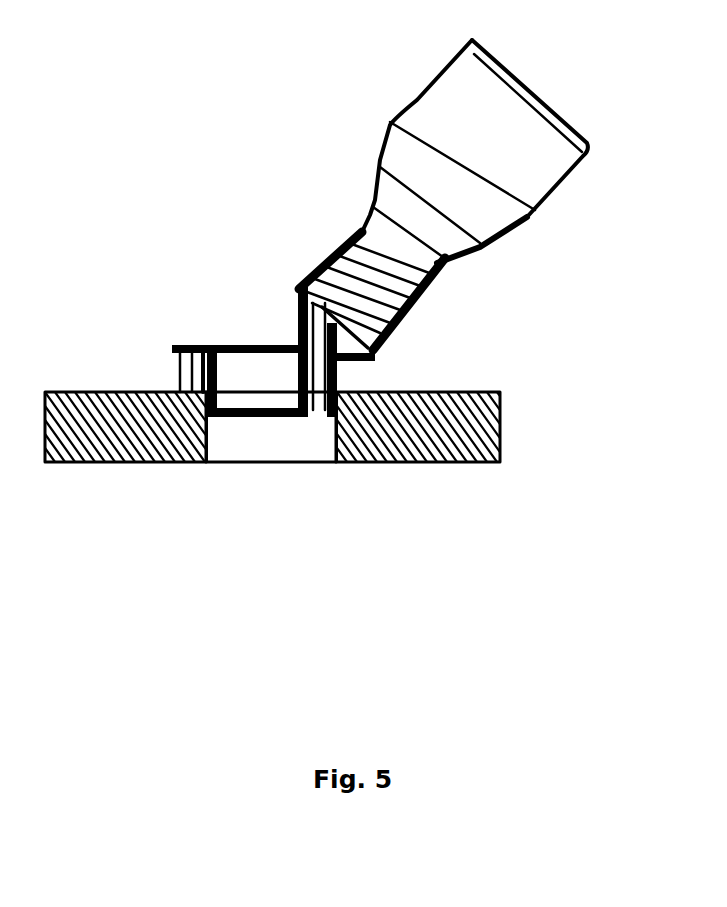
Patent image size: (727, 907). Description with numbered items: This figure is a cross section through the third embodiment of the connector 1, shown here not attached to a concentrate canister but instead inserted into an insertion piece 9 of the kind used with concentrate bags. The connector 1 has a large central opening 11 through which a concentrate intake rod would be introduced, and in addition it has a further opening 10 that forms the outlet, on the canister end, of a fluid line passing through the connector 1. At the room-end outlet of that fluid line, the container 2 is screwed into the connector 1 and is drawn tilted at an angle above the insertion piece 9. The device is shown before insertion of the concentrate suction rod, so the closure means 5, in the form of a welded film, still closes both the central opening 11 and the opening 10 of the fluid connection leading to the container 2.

The connector 1 is at (203, 345).
The container 2 is at (555, 105).
The closure means 5 is at (248, 418).
The insertion piece 9 is at (505, 428).
The opening 10 is at (316, 463).
The central opening 11 is at (263, 378).